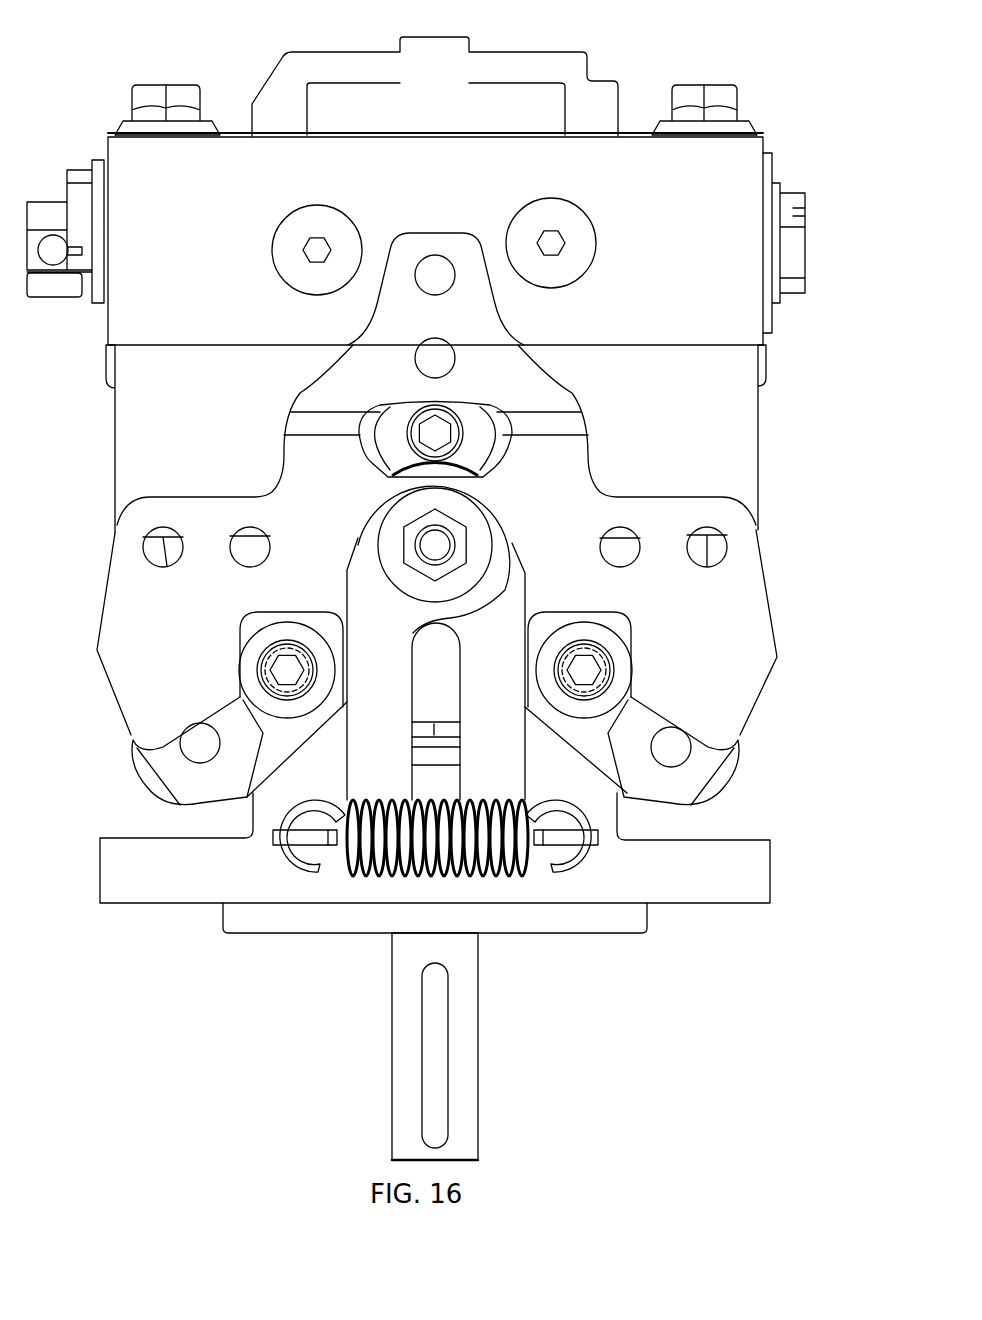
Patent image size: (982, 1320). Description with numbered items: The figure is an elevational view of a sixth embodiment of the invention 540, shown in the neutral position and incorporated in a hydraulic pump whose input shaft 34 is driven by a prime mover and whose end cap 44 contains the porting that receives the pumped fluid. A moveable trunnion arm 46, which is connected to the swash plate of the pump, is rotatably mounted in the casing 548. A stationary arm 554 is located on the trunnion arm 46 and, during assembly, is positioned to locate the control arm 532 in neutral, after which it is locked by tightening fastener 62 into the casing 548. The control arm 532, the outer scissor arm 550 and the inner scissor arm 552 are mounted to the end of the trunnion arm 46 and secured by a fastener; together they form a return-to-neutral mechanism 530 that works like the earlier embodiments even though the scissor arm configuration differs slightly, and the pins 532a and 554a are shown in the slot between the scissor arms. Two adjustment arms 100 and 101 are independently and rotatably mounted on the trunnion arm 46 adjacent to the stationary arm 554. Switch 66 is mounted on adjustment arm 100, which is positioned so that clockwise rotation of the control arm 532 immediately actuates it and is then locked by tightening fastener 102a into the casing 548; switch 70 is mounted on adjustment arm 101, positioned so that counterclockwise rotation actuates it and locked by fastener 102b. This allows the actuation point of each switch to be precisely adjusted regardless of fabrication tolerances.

The valve actuator assembly 540 is at (783, 92).
The end cap 44 is at (196, 258).
The casing 548 is at (218, 428).
The control arm 532 is at (458, 332).
The fastener 62 is at (413, 413).
The stationary arm 554 is at (497, 418).
The trunnion arm 46 is at (437, 545).
The outer scissor arm 550 is at (400, 676).
The inner scissor arm 552 is at (512, 676).
The upper pin 532a is at (434, 727).
The lower pin 554a is at (434, 757).
The fastener 102b is at (258, 670).
The fastener 102a is at (613, 670).
The switch 70 is at (201, 790).
The switch 66 is at (700, 793).
The adjustment arm 101 is at (287, 733).
The adjustment arm 100 is at (584, 733).
The return-to-neutral mechanism 530 is at (332, 878).
The input shaft 34 is at (478, 1047).